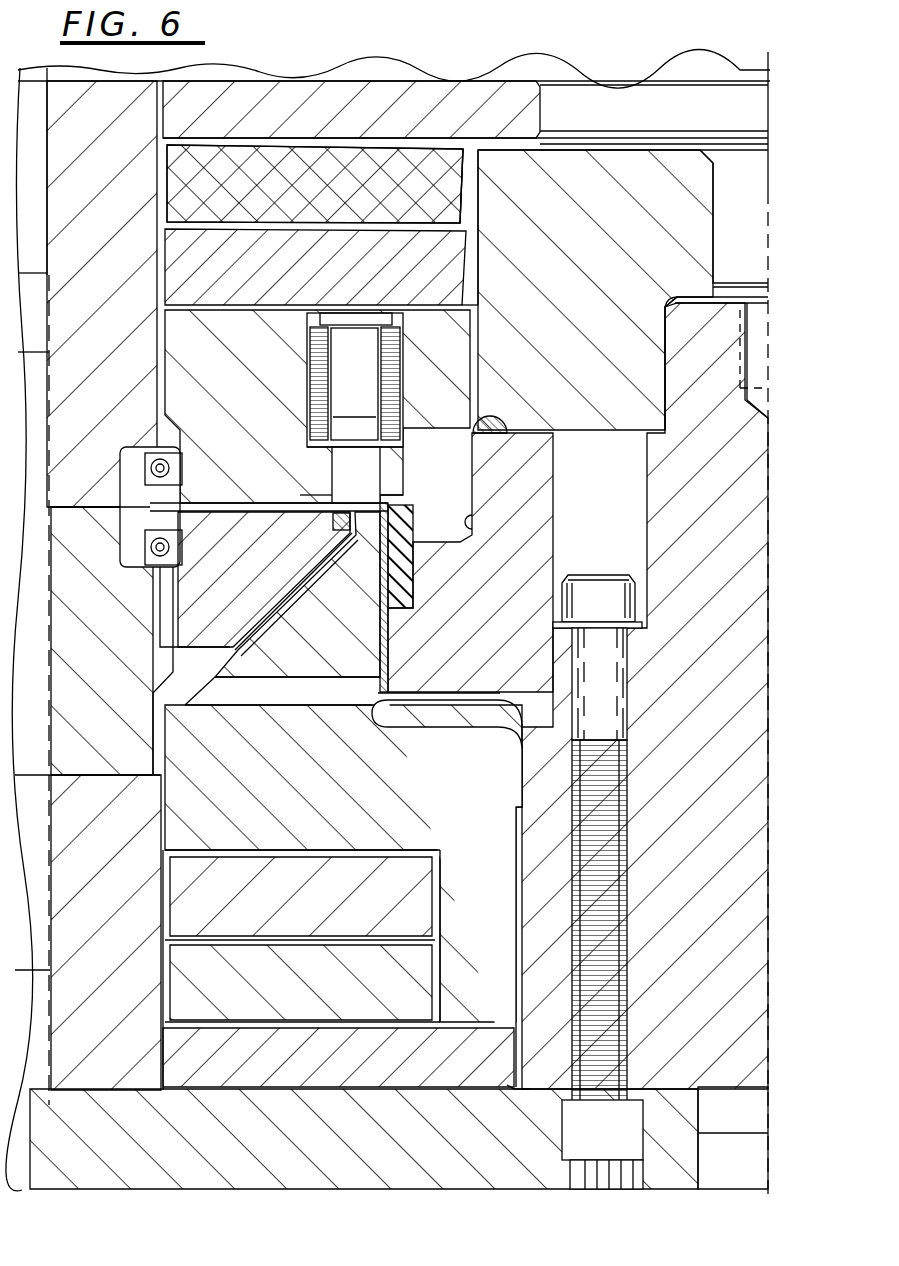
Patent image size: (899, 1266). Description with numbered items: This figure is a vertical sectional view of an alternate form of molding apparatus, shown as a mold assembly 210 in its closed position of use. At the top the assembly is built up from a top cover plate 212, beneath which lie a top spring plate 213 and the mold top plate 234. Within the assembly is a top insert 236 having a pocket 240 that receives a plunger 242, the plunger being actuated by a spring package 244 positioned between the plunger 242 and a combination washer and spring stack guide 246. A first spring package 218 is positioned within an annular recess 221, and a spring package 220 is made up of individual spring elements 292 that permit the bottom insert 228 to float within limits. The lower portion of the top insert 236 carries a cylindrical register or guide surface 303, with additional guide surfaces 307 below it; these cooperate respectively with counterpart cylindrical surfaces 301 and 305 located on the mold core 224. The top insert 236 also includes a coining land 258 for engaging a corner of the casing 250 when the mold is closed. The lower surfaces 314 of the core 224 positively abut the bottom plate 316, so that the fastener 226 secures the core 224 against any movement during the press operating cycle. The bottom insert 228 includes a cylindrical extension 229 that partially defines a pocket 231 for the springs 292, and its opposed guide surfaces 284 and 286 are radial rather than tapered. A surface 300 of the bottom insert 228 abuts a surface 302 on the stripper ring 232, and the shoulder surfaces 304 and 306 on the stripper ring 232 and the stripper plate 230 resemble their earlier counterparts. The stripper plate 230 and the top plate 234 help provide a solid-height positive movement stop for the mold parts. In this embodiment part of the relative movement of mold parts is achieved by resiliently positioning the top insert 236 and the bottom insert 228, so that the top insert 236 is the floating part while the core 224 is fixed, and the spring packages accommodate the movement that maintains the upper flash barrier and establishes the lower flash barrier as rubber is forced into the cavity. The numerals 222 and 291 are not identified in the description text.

The mold assembly 210 is at (597, 16).
The top cover plate 212 is at (284, 66).
The top spring plate 213 is at (323, 123).
The first spring package 218 is at (485, 200).
The spring package 220 is at (421, 850).
The annular recess 221 is at (470, 287).
The housing section 222 is at (80, 880).
The mold core 224 is at (674, 701).
The fastener 226 is at (581, 685).
The bottom insert 228 is at (259, 790).
The cylindrical extension 229 is at (497, 968).
The stripper plate 230 is at (71, 608).
The pocket 231 is at (172, 941).
The stripper ring 232 is at (208, 597).
The mold top plate 234 is at (78, 190).
The top insert 236 is at (563, 260).
The pocket 240 is at (392, 468).
The plunger 242 is at (345, 468).
The spring package 244 is at (403, 360).
The combination washer and spring stack guide 246 is at (343, 345).
The casing 250 is at (390, 545).
The coining land 258 is at (385, 500).
The opposed surface 284 is at (455, 690).
The opposed surface 286 is at (412, 730).
The coil 291 is at (285, 205).
The spring elements 292 is at (278, 911).
The surface 300 is at (262, 602).
The cylindrical surface 301 is at (655, 402).
The surface 302 is at (298, 580).
The register or guide surface 303 is at (682, 367).
The shoulder surface 304 is at (176, 642).
The cylindrical surface 305 is at (472, 522).
The shoulder surface 306 is at (175, 662).
The guide surfaces 307 is at (473, 478).
The lower surfaces 314 is at (550, 1092).
The bottom plate 316 is at (248, 1148).